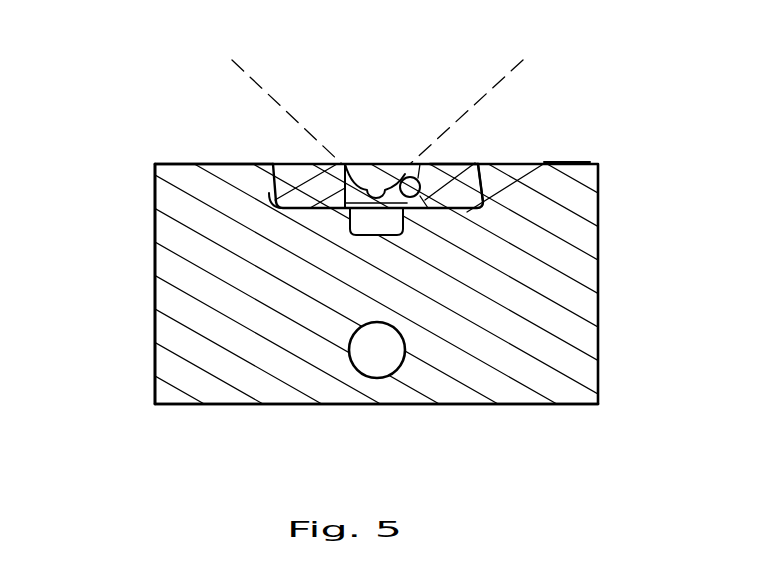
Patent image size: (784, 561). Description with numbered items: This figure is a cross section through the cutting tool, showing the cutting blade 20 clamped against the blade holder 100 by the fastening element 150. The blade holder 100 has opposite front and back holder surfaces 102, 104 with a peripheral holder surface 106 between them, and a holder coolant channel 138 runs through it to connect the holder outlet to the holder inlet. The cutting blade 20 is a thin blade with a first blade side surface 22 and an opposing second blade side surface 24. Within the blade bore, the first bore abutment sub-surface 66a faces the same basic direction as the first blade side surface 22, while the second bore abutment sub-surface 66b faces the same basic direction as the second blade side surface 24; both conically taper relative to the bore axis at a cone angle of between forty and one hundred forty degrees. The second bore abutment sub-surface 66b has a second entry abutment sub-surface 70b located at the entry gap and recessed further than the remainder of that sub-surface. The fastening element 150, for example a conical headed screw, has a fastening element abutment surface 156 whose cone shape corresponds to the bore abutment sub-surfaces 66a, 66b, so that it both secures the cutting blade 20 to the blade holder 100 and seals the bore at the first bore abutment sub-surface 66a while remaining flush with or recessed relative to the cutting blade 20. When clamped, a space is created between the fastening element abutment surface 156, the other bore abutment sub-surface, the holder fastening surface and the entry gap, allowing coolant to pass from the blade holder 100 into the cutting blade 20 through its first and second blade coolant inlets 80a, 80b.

The blade holder 100 is at (634, 194).
The front holder surface 102 is at (189, 159).
The back holder surface 104 is at (210, 405).
The peripheral holder surface 106 is at (129, 297).
The cutting blade 20 is at (280, 140).
The first blade side surface 22 is at (452, 161).
The second blade side surface 24 is at (424, 204).
The fastening element 150 is at (357, 157).
The fastening element abutment surface 156 is at (479, 162).
The first bore abutment sub-surface 66a is at (409, 166).
The second bore abutment sub-surface 66b is at (423, 210).
The first blade coolant inlet 80a is at (362, 192).
The second blade coolant inlet 80b is at (468, 212).
The second entry abutment sub-surface 70b is at (373, 212).
The holder coolant channel 138 is at (398, 374).